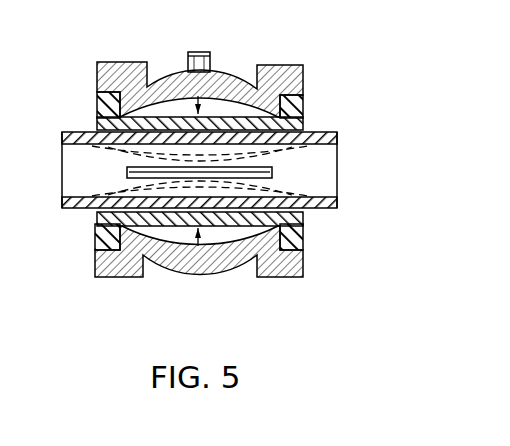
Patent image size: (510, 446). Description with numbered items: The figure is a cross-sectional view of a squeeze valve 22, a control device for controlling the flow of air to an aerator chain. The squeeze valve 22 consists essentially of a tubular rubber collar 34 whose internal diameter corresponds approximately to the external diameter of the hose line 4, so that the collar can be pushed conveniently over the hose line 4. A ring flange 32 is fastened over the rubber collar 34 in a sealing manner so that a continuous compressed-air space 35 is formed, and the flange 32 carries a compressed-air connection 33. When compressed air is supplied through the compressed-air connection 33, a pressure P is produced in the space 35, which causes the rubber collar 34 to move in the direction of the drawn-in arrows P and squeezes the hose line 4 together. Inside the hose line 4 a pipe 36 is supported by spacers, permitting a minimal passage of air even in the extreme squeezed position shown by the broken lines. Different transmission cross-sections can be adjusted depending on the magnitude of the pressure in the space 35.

The hose line 4 is at (316, 131).
The squeeze valve 22 is at (152, 172).
The ring flange 32 is at (279, 72).
The compressed-air connection 33 is at (198, 51).
The tubular rubber collar 34 is at (103, 222).
The compressed-air space 35 is at (222, 110).
The pipe 36 is at (127, 172).